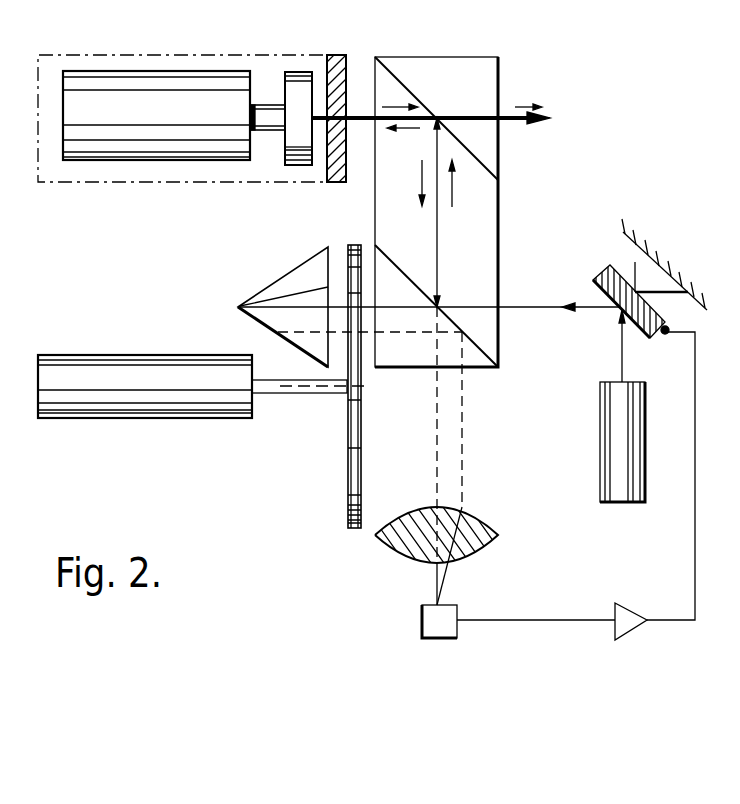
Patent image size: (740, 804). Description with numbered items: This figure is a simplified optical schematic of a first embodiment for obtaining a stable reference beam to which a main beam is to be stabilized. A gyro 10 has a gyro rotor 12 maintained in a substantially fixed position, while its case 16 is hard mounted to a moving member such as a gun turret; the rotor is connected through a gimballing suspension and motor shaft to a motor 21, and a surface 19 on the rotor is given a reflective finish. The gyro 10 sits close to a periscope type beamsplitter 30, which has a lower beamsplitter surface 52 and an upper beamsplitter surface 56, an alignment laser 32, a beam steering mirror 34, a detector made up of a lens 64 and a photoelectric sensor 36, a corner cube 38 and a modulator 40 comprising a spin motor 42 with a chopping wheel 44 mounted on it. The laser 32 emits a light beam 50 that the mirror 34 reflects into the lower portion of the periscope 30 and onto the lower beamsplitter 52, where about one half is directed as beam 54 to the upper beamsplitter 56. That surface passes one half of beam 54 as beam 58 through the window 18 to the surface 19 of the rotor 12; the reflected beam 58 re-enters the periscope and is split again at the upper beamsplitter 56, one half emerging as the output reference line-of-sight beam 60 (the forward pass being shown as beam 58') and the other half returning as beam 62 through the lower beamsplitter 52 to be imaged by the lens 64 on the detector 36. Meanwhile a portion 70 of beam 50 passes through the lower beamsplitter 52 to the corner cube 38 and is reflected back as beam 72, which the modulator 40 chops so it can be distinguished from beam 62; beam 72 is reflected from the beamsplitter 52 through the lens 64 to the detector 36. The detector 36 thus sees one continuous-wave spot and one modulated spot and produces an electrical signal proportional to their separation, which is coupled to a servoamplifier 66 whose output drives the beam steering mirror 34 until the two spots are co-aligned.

The gyro 10 is at (73, 228).
The gyro rotor 12 is at (293, 85).
The case 16 is at (60, 54).
The window 18 is at (347, 56).
The surface 19 is at (313, 150).
The motor 21 is at (150, 158).
The periscope type beamsplitter 30 is at (532, 52).
The alignment laser 32 is at (595, 500).
The beam steering mirror 34 is at (668, 327).
The photoelectric sensor 36 is at (422, 630).
The corner cube 38 is at (265, 296).
The modulator 40 is at (178, 444).
The spin motor 42 is at (102, 419).
The chopping wheel 44 is at (348, 528).
The light beam 50 is at (620, 358).
The lower beamsplitter surface 52 is at (473, 348).
The beam 54 is at (452, 192).
The upper beamsplitter surface 56 is at (480, 162).
The beam 58 is at (401, 146).
The forward beam 58' is at (431, 95).
The output reference line-of-sight beam 60 is at (520, 103).
The beam 62 is at (420, 183).
The lens 64 is at (500, 531).
The servoamplifier 66 is at (638, 612).
The portion of beam 70 is at (407, 306).
The beam 72 is at (393, 334).